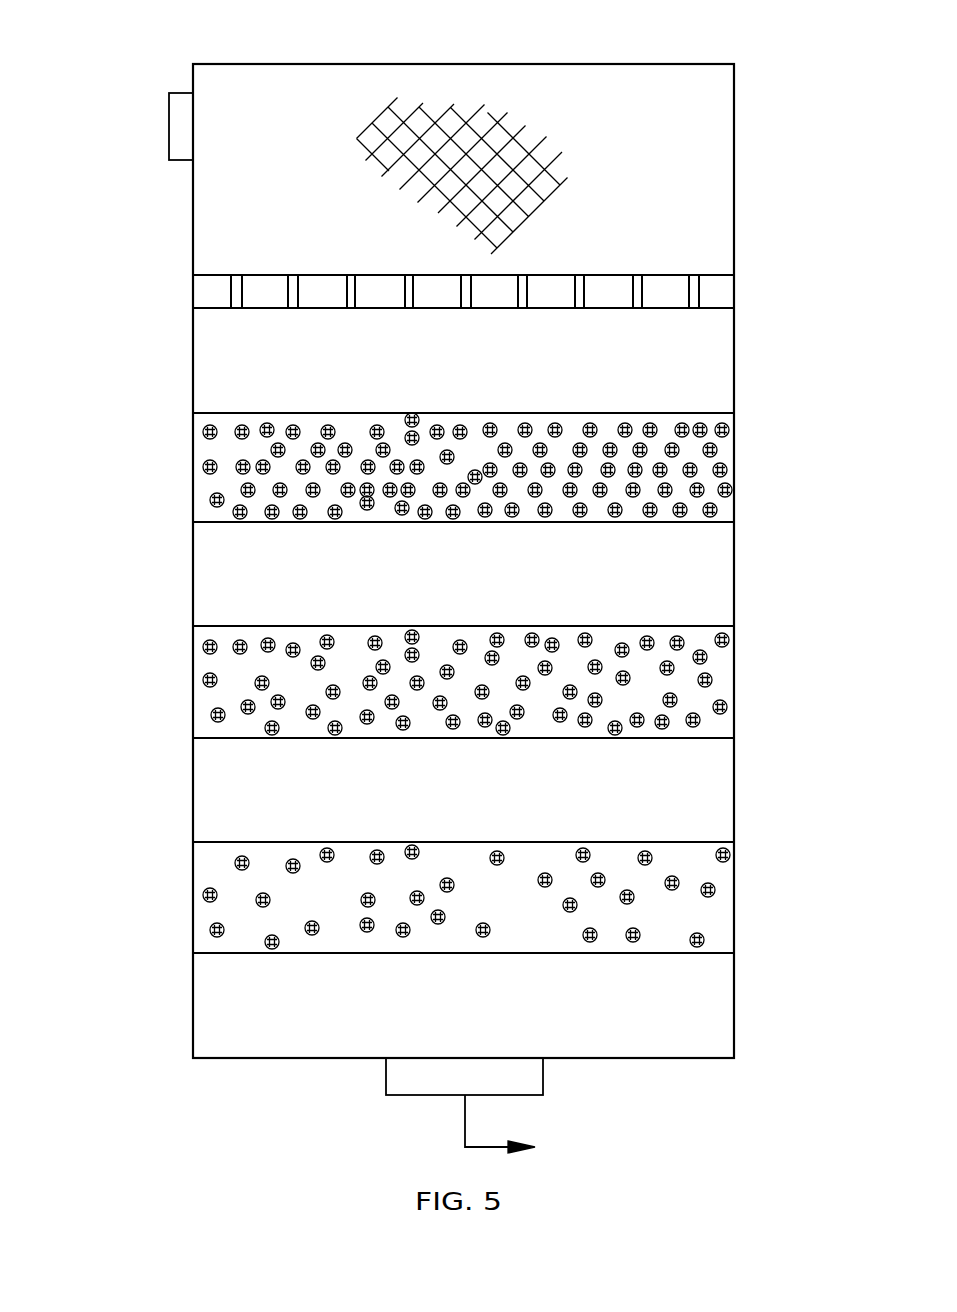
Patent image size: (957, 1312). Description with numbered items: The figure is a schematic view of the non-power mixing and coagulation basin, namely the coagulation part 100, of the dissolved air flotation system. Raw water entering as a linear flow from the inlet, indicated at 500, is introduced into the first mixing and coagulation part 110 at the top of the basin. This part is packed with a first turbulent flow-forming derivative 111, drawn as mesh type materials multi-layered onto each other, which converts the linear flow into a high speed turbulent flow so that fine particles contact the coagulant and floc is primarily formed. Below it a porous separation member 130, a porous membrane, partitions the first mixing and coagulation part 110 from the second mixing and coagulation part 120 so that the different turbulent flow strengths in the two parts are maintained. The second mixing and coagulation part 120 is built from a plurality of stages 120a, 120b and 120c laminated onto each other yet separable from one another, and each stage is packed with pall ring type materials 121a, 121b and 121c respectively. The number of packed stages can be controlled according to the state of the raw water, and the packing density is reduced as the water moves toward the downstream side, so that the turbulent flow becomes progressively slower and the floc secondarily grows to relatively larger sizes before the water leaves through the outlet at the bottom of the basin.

The coagulation part 100 is at (85, 38).
The first mixing and coagulation part 110 is at (735, 170).
The first turbulent flow-forming derivative 111 is at (453, 122).
The porous separation member 130 is at (735, 291).
The second mixing and coagulation part 120 is at (838, 441).
The first pall ring type material stage 120a is at (735, 460).
The second pall ring type material stage 120b is at (735, 678).
The third pall ring type material stage 120c is at (735, 898).
The pall ring type materials of first stage 121a is at (208, 462).
The pall ring type materials of second stage 121b is at (210, 713).
The pall ring type materials of third stage 121c is at (202, 892).
The water inlet 500 is at (148, 127).